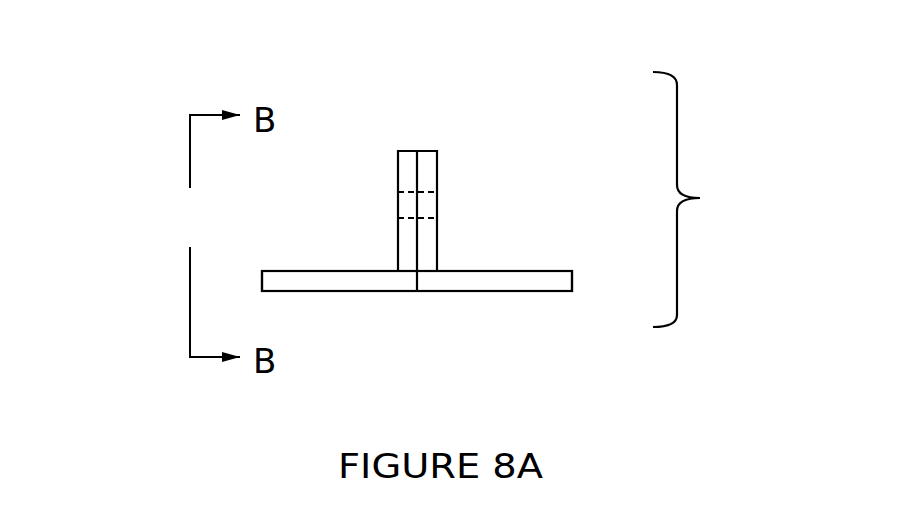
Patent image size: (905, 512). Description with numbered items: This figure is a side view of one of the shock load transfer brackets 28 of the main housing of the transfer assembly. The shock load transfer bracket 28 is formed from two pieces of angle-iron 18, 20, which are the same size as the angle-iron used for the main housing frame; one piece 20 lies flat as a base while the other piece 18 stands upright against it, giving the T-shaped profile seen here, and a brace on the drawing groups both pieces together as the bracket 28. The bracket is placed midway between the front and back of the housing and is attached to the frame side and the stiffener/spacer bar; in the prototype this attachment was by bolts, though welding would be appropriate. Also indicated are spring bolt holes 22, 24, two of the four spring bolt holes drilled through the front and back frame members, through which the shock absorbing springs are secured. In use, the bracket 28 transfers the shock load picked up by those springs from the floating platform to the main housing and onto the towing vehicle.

The angle-iron piece 18 is at (477, 270).
The angle-iron piece 20 is at (317, 270).
The spring bolt hole 22 is at (437, 206).
The spring bolt hole 24 is at (392, 145).
The shock load transfer bracket 28 is at (755, 199).